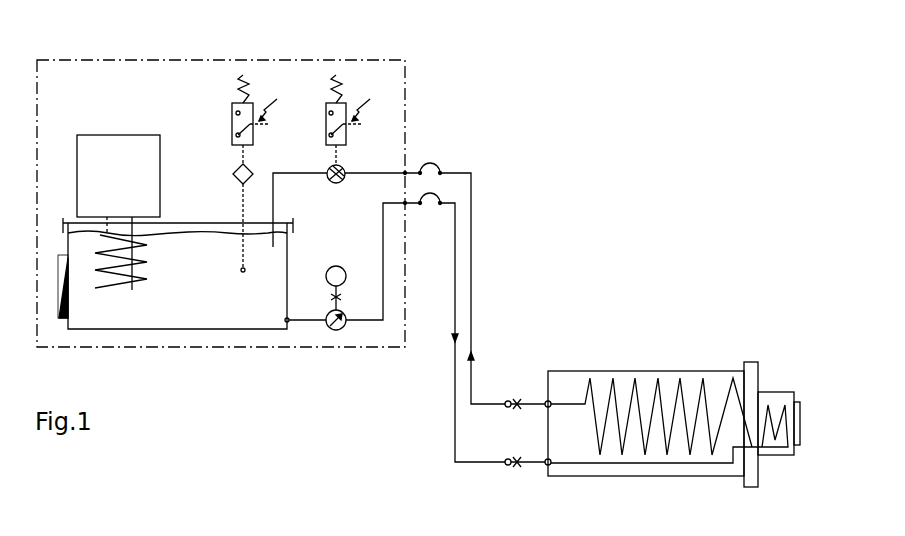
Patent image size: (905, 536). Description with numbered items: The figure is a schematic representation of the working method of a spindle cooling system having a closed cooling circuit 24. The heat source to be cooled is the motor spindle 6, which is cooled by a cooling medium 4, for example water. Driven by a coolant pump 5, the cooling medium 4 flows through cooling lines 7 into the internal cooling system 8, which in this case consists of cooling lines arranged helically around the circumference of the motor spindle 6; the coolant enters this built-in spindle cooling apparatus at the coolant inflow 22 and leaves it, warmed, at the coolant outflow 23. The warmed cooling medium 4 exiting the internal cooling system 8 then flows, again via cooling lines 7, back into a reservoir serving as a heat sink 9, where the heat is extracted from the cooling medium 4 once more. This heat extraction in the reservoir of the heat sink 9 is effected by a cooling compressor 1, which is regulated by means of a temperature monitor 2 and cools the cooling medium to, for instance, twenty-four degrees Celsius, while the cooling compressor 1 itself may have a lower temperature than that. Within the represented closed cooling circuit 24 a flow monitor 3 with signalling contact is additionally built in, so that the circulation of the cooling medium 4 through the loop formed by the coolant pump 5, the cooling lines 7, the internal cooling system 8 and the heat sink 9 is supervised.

The cooling compressor 1 is at (118, 212).
The temperature monitor 2 is at (257, 88).
The flow monitor 3 is at (351, 92).
The cooling medium 4 is at (177, 276).
The coolant pump 5 is at (328, 298).
The motor spindle 6 is at (674, 415).
The cooling lines 7 is at (389, 312).
The internal cooling system 8 is at (693, 383).
The heat sink 9 is at (131, 320).
The coolant inflow 22 is at (509, 477).
The coolant outflow 23 is at (513, 394).
The closed cooling circuit 24 is at (566, 179).